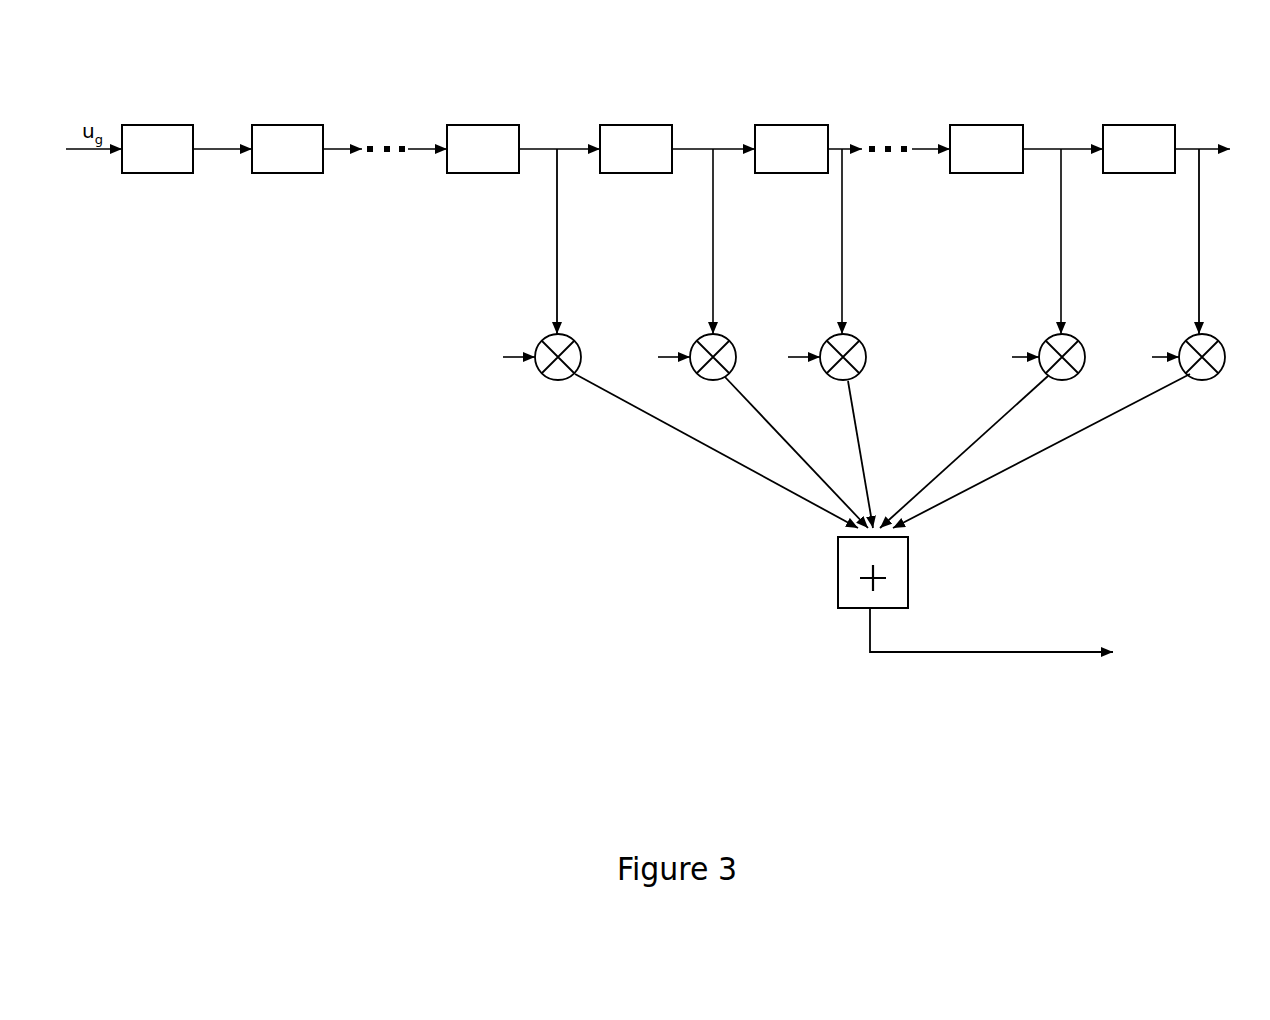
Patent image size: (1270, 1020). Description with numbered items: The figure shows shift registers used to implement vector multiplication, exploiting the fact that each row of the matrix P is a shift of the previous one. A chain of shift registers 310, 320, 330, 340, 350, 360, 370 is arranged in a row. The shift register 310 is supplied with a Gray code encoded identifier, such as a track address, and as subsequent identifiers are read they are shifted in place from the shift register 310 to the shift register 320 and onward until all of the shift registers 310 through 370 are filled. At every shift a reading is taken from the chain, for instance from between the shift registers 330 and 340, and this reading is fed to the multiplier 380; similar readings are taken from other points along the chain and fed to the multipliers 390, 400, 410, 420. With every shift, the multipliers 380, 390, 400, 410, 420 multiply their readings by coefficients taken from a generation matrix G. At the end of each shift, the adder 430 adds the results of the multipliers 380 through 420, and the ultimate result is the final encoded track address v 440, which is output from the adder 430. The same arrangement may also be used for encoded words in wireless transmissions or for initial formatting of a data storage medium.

The shift register 310 is at (156, 124).
The shift register 320 is at (288, 124).
The shift register 330 is at (483, 124).
The shift register 340 is at (635, 124).
The shift register 350 is at (792, 124).
The shift register 360 is at (987, 124).
The shift register 370 is at (1143, 124).
The multiplier 380 is at (544, 343).
The multiplier 390 is at (699, 343).
The multiplier 400 is at (829, 343).
The multiplier 410 is at (1048, 343).
The multiplier 420 is at (1187, 343).
The adder 430 is at (908, 576).
The final encoded track address v 440 is at (1085, 626).